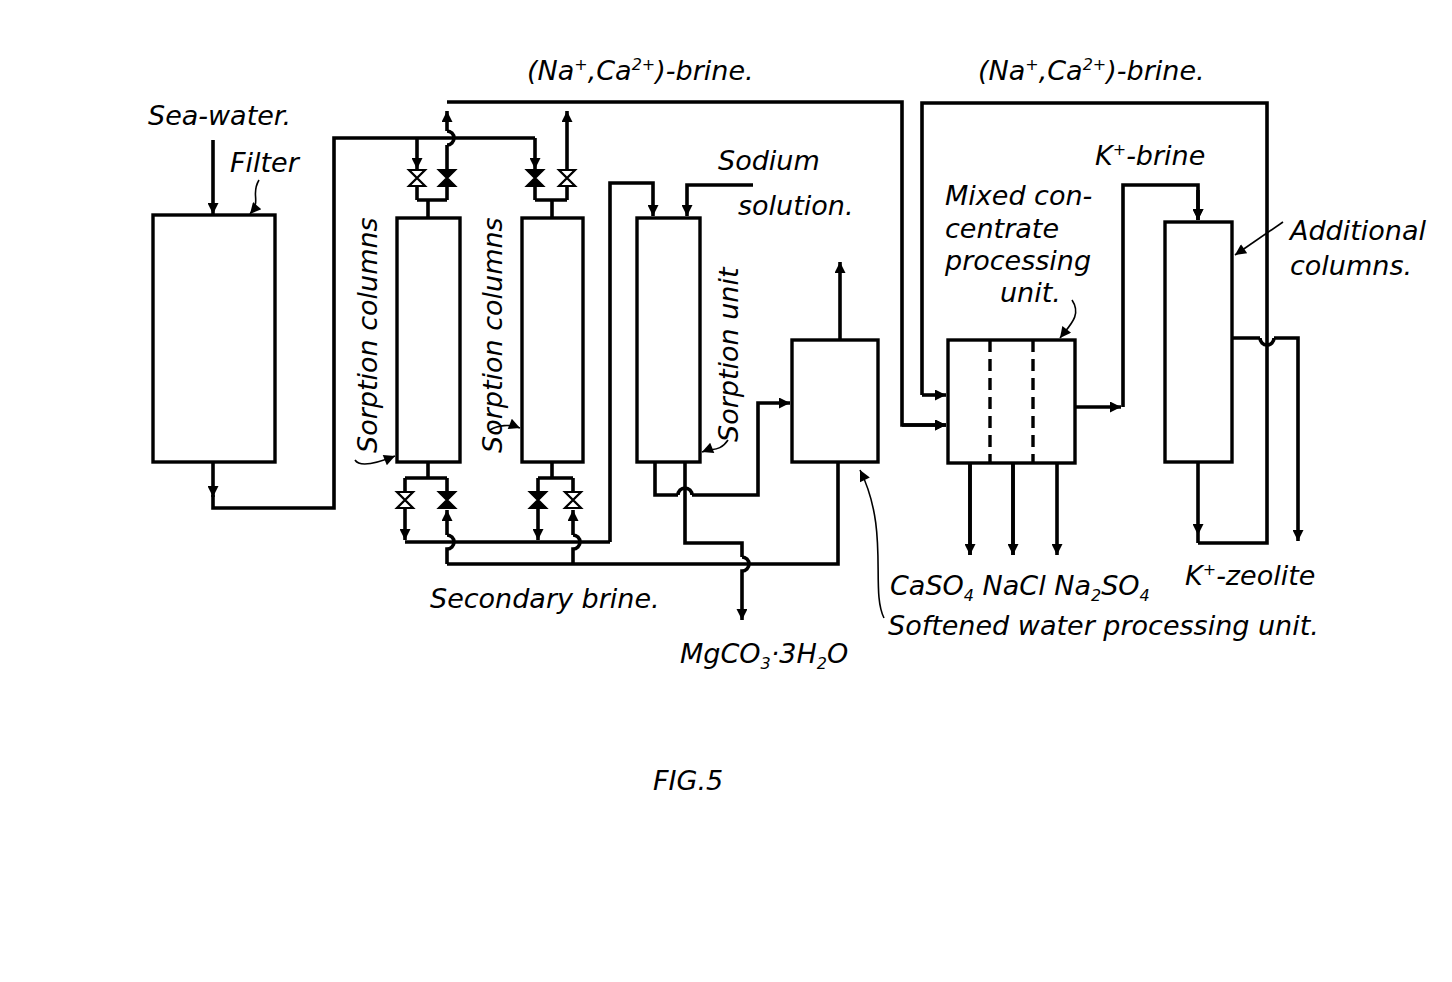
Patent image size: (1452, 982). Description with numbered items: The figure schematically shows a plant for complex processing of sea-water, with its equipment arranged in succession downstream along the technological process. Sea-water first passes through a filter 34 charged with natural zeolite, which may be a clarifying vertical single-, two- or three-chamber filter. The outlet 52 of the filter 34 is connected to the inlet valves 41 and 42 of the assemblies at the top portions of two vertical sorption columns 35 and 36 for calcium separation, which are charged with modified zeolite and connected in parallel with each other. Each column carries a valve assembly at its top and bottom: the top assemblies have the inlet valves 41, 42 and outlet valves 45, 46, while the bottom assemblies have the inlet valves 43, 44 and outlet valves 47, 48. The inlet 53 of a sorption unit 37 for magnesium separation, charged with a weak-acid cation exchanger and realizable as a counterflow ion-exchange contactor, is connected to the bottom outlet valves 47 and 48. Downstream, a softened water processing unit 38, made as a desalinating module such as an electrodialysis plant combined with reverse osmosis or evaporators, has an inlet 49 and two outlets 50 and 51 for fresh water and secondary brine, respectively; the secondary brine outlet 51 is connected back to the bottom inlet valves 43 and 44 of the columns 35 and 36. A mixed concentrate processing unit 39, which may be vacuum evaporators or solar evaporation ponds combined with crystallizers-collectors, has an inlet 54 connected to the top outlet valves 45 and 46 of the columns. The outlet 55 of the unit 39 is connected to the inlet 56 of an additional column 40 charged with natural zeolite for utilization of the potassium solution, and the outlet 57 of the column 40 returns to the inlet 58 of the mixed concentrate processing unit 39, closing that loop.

The filter 34 is at (214, 338).
The sorption column 35 is at (428, 340).
The sorption column 36 is at (552, 340).
The sorption unit 37 is at (668, 340).
The softened water processing unit 38 is at (835, 401).
The mixed concentrate processing unit 39 is at (1011, 447).
The additional column 40 is at (1198, 342).
The inlet valve 41 is at (412, 176).
The inlet valve 42 is at (528, 181).
The inlet valve 43 is at (452, 502).
The inlet valve 44 is at (580, 500).
The outlet valve 45 is at (452, 182).
The outlet valve 46 is at (572, 181).
The outlet valve 47 is at (399, 503).
The outlet valve 48 is at (533, 500).
The inlet 49 is at (790, 400).
The outlet 50 is at (842, 330).
The outlet 51 is at (836, 512).
The outlet 52 is at (212, 494).
The inlet 53 is at (655, 200).
The inlet 54 is at (920, 430).
The outlet 55 is at (1083, 413).
The inlet 56 is at (1205, 205).
The outlet 57 is at (1200, 475).
The inlet 58 is at (930, 395).